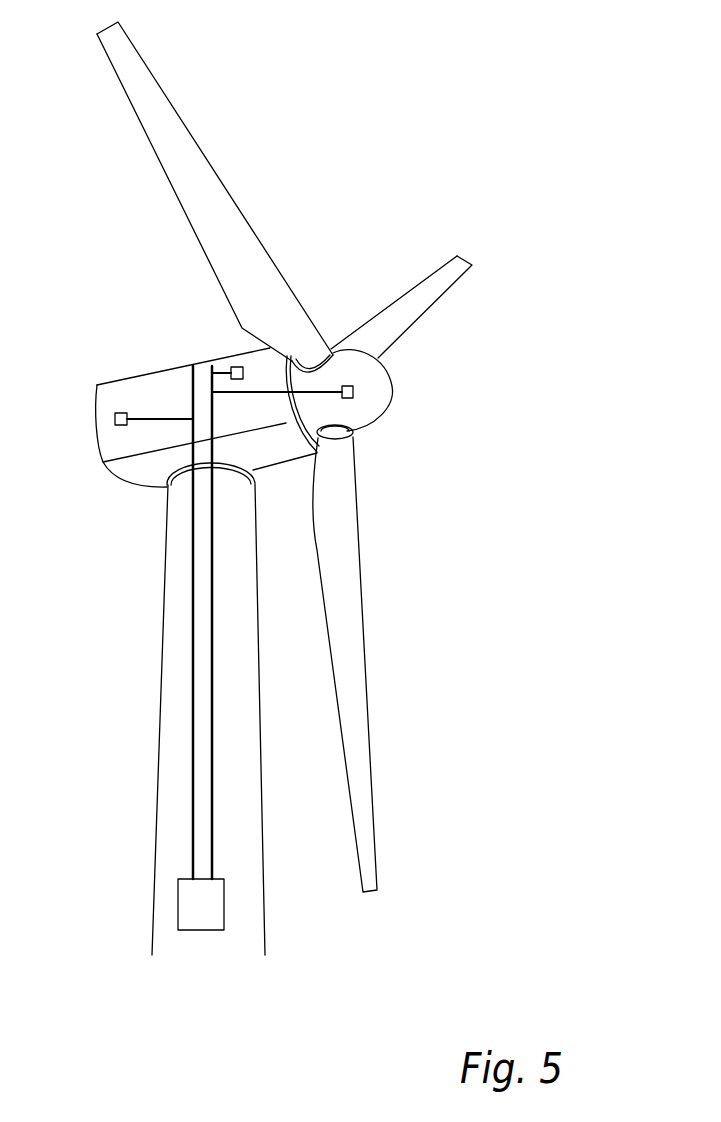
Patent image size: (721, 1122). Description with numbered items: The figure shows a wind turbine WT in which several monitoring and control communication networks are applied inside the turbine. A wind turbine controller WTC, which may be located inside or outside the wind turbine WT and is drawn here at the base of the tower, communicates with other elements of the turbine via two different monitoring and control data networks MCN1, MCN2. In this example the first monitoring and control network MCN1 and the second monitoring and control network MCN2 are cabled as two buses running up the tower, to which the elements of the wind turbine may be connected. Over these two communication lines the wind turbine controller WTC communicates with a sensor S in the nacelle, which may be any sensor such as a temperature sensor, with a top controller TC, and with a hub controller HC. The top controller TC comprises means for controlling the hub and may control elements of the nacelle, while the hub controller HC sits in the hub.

The wind turbine WT is at (497, 351).
The sensor S is at (236, 367).
The top controller TC is at (116, 414).
The hub controller HC is at (353, 396).
The wind turbine controller WTC is at (210, 930).
The first monitoring and control network MCN1 is at (193, 684).
The second monitoring and control network MCN2 is at (212, 735).